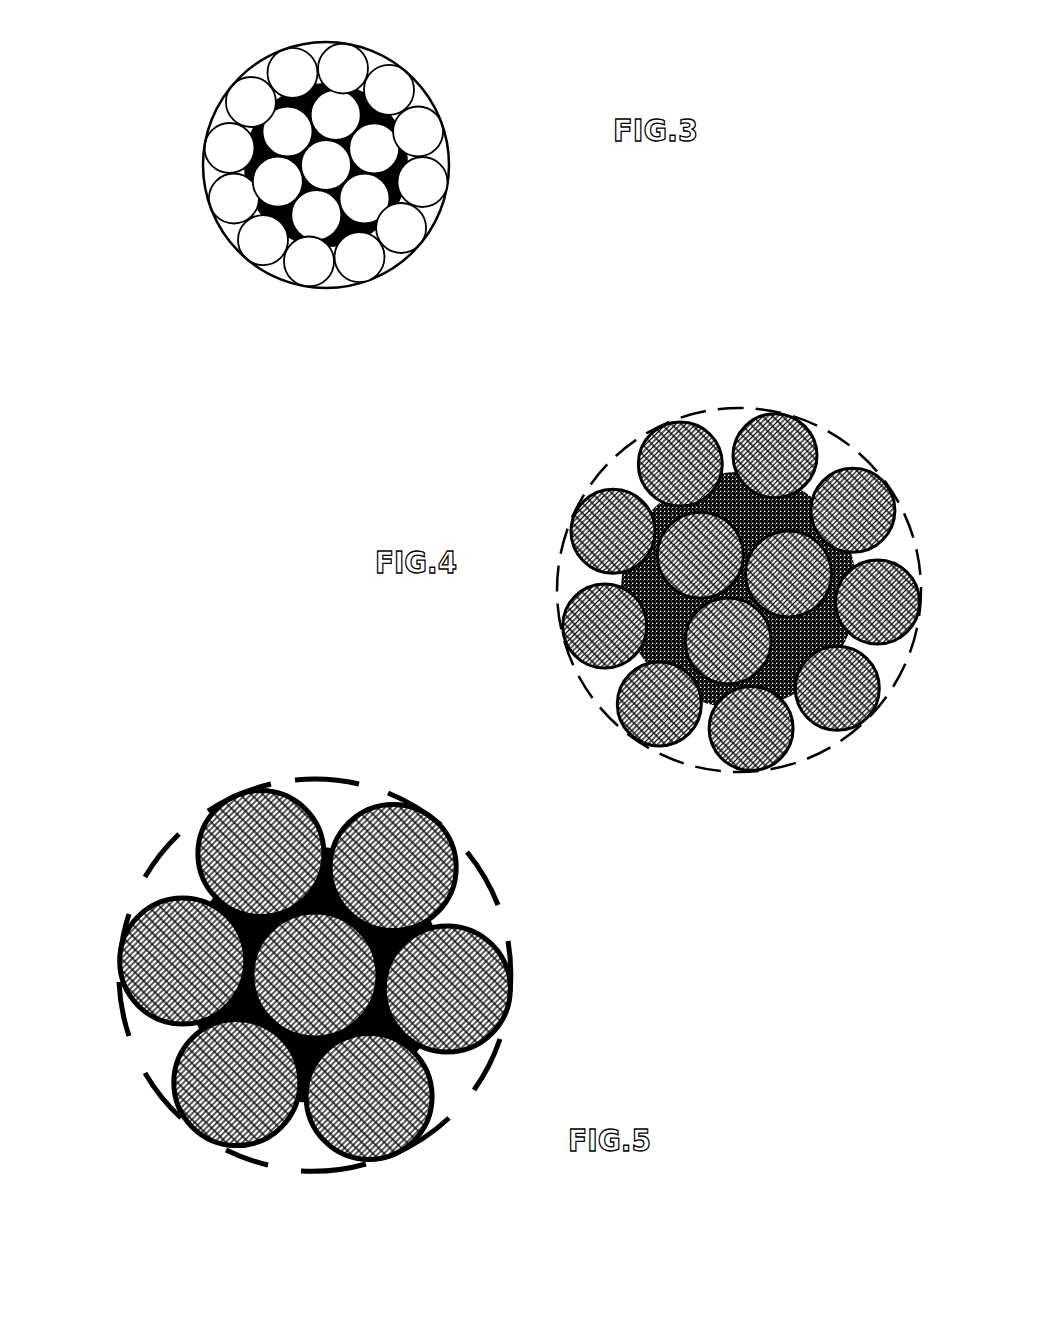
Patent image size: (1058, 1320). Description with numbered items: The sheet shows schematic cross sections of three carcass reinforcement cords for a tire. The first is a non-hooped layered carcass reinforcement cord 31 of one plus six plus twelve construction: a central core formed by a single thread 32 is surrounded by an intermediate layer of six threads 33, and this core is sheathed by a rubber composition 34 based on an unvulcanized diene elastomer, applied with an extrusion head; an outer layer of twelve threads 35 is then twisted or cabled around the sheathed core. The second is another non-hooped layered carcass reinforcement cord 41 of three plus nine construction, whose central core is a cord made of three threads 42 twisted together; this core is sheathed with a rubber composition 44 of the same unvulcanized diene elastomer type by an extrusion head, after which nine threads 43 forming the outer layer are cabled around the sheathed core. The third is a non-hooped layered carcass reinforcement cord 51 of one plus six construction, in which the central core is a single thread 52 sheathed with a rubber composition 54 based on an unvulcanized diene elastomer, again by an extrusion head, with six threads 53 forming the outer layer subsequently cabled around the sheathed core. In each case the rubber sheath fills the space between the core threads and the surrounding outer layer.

In FIG. 3, the carcass reinforcement cord 31 is at (427, 90).
In FIG. 3, the thread 32 is at (307, 157).
In FIG. 3, the threads 33 is at (272, 183).
In FIG. 3, the rubber composition 34 is at (400, 170).
In FIG. 3, the threads 35 is at (360, 260).
In FIG. 4, the carcass reinforcement cord 41 is at (602, 460).
In FIG. 4, the threads 42 is at (842, 478).
In FIG. 4, the threads 43 is at (778, 432).
In FIG. 4, the rubber composition 44 is at (628, 607).
In FIG. 5, the carcass reinforcement cord 51 is at (290, 773).
In FIG. 5, the thread 52 is at (293, 1007).
In FIG. 5, the threads 53 is at (173, 917).
In FIG. 5, the rubber composition 54 is at (203, 1017).